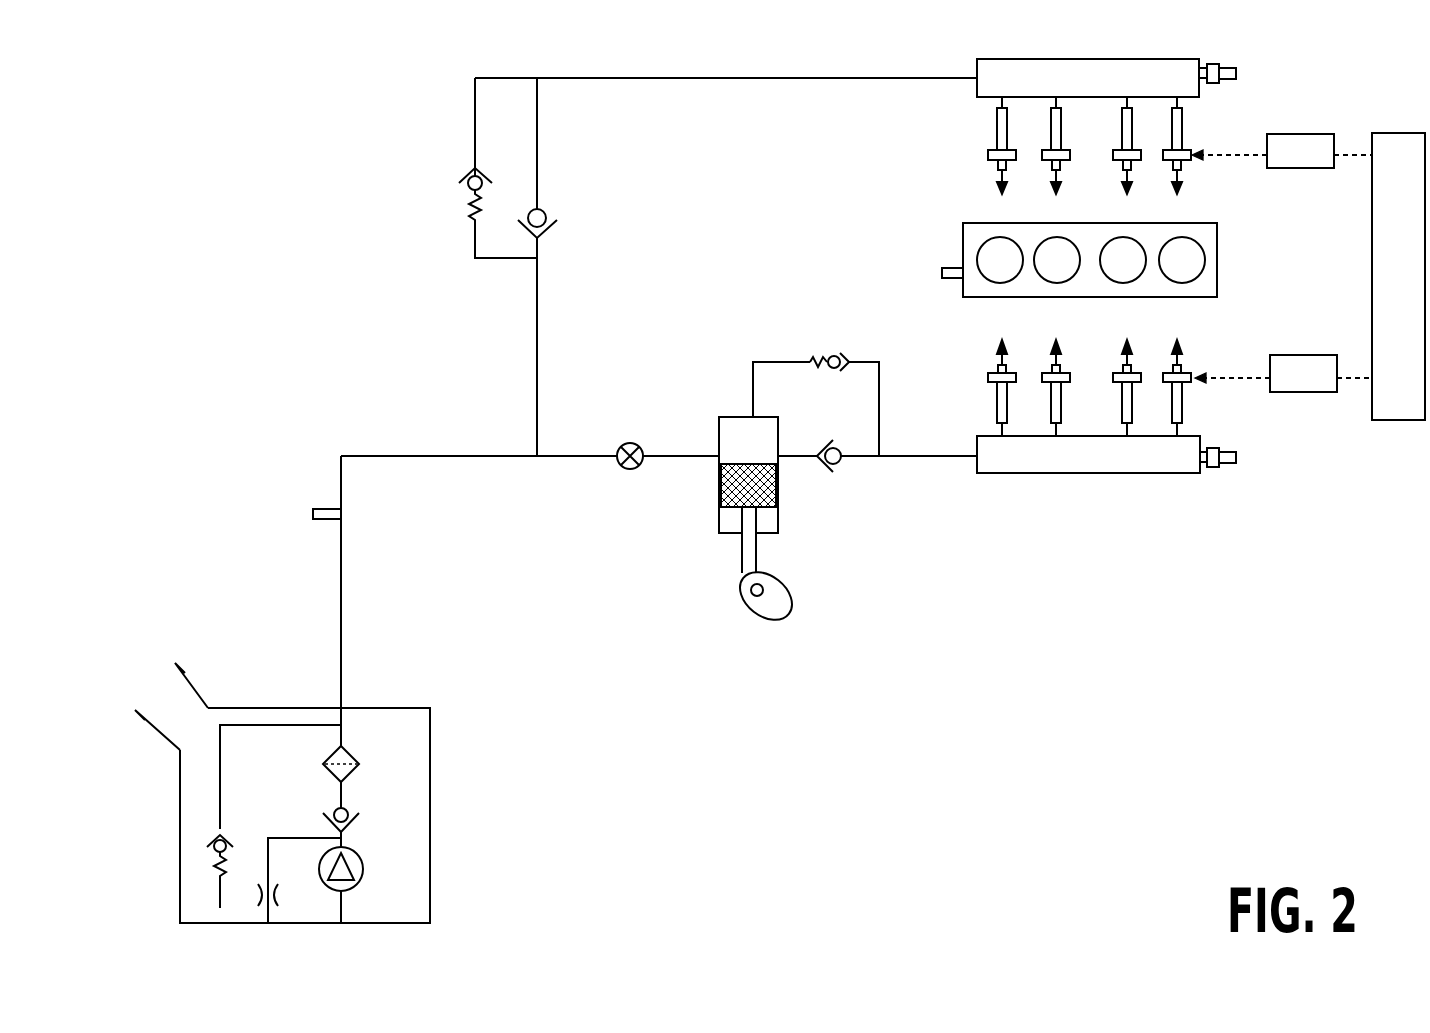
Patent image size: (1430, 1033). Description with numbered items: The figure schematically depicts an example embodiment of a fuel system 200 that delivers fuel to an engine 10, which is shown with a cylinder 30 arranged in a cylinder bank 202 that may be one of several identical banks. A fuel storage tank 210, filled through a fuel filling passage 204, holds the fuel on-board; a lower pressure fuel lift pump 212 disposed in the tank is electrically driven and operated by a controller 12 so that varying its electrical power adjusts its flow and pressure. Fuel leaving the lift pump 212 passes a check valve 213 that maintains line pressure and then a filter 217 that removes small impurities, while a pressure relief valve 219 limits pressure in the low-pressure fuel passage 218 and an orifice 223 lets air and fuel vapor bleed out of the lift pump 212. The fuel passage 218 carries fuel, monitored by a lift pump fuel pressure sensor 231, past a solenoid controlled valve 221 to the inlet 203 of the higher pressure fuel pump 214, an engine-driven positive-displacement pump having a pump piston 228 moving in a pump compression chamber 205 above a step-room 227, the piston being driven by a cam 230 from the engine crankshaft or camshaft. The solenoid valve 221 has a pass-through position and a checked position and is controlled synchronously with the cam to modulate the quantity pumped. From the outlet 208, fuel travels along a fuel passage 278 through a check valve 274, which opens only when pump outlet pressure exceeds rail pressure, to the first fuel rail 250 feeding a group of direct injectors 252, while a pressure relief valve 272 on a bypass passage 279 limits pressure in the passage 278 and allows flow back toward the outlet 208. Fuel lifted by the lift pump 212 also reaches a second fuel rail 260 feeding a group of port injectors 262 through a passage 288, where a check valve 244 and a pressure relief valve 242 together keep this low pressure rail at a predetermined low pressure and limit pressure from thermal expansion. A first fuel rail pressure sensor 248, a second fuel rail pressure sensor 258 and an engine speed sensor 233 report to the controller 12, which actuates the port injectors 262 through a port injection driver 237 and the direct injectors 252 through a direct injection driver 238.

The fuel system 200 is at (138, 114).
The engine 10 is at (917, 184).
The controller 12 is at (1386, 289).
The cylinder 30 is at (988, 272).
The cylinder bank 202 is at (1217, 262).
The inlet 203 is at (718, 455).
The fuel filling passage 204 is at (198, 693).
The pump compression chamber 205 is at (762, 443).
The outlet 208 is at (778, 455).
The fuel storage tank 210 is at (430, 838).
The lower pressure fuel pump 212 is at (362, 872).
The check valve 213 is at (352, 808).
The higher pressure fuel pump 214 is at (737, 417).
The filter 217 is at (357, 753).
The fuel passage 218 is at (345, 675).
The pressure relief valve 219 is at (210, 866).
The solenoid controlled valve 221 is at (622, 445).
The orifice 223 is at (262, 897).
The step-room 227 is at (727, 525).
The pump piston 228 is at (762, 513).
The cam 230 is at (790, 612).
The lift pump fuel pressure sensor 231 is at (328, 508).
The engine speed sensor 233 is at (963, 268).
The port injection driver 237 is at (1317, 164).
The direct injection driver 238 is at (1320, 387).
The pressure relief valve 242 is at (468, 168).
The valve 244 is at (545, 206).
The first fuel rail pressure sensor 248 is at (1234, 455).
The first fuel rail 250 is at (1200, 437).
The direct injectors 252 is at (1070, 373).
The second fuel rail pressure sensor 258 is at (1234, 80).
The second fuel rail 260 is at (1200, 97).
The port injectors 262 is at (1070, 157).
The pressure relief valve 272 is at (822, 356).
The check valve 274 is at (822, 438).
The fuel passage 278 is at (915, 455).
The bypass passage 279 is at (780, 362).
The fuel passage 288 is at (676, 78).